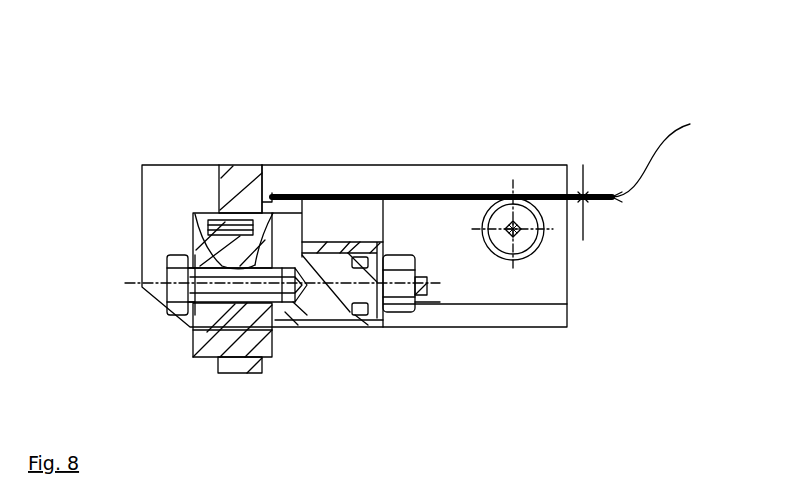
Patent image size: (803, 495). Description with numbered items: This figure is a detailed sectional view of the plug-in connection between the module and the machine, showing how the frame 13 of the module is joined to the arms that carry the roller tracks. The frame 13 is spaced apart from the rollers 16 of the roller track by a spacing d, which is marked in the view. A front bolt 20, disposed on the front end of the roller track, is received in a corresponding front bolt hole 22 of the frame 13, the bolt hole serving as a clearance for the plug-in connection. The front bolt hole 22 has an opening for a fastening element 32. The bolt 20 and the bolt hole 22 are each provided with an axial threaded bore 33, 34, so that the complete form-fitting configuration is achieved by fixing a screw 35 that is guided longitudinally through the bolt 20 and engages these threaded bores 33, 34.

The frame 13 is at (433, 180).
The rollers 16 is at (522, 240).
The bolts 20 is at (323, 298).
The front bolt holes 22 is at (235, 310).
The fastening element 32 is at (232, 270).
The axial threaded bore 33 is at (192, 212).
The axial threaded bore 34 is at (273, 213).
The screw 35 is at (178, 292).